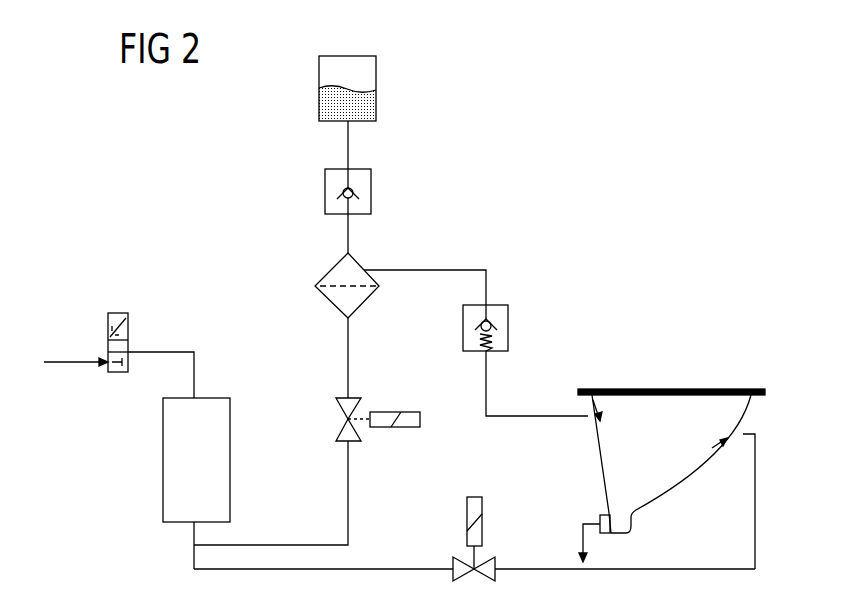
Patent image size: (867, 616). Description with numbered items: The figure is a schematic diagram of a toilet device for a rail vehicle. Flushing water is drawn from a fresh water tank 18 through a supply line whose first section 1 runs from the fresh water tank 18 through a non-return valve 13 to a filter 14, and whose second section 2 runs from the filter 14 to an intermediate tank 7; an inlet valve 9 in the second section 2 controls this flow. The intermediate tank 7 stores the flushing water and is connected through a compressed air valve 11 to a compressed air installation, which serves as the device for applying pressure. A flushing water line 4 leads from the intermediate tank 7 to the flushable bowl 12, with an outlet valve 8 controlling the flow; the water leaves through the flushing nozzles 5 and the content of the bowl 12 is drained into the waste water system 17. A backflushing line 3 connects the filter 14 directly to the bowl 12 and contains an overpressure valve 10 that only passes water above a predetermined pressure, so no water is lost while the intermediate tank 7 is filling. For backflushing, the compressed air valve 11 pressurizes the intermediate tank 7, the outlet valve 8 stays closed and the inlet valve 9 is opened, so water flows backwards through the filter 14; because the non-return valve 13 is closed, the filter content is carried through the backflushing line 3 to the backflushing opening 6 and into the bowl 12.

The first section of the supply line 1 is at (348, 240).
The second section of the supply line 2 is at (348, 333).
The backflushing line 3 is at (466, 270).
The flushing water line 4 is at (377, 569).
The flushing nozzles 5 is at (749, 432).
The backflushing opening 6 is at (588, 412).
The intermediate tank 7 is at (230, 452).
The outlet valve 8 is at (467, 527).
The inlet valve 9 is at (407, 427).
The overpressure valve 10 is at (508, 326).
The compressed air valve 11 is at (130, 334).
The bowl 12 is at (731, 388).
The non-return valve 13 is at (371, 192).
The filter 14 is at (364, 266).
The waste water system 17 is at (598, 516).
The fresh water tank 18 is at (376, 90).